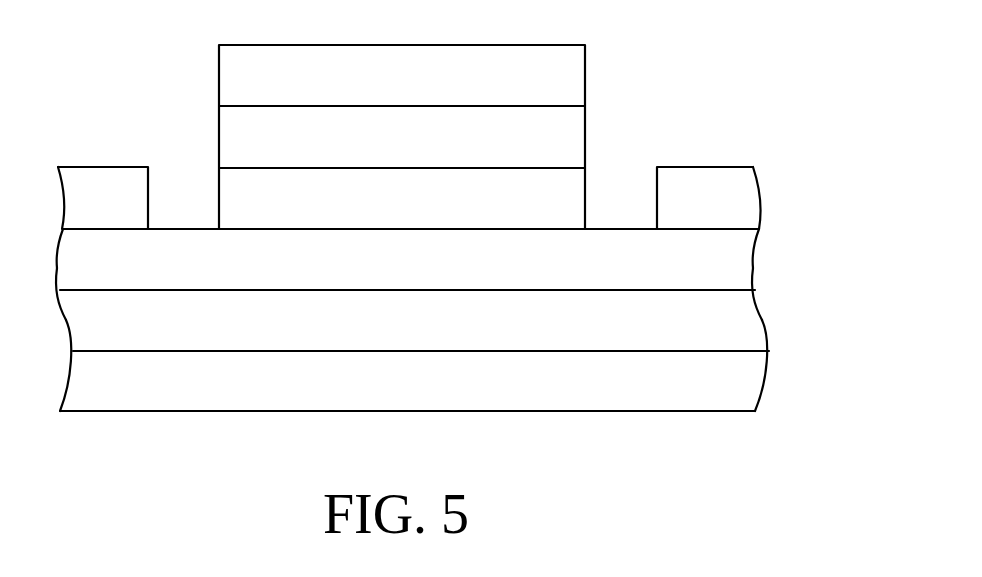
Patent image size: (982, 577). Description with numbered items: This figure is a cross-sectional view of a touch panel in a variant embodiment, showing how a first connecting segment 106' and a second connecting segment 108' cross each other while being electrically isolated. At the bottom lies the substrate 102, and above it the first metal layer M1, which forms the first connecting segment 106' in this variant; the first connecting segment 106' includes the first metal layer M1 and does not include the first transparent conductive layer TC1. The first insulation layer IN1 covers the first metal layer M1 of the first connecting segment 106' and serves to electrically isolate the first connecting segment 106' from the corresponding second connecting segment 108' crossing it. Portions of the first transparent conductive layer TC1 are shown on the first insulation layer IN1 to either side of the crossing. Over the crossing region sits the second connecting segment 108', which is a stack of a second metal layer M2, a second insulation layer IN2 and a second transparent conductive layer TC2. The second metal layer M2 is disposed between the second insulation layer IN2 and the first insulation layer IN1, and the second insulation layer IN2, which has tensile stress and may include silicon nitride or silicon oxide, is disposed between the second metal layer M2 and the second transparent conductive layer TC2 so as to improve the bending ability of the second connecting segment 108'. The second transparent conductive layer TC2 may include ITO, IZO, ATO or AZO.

The substrate 102 is at (366, 397).
The first metal layer M1 is at (368, 339).
The first insulation layer IN1 is at (366, 277).
The first transparent conductive layer TC1 is at (134, 217).
The second metal layer M2 is at (366, 214).
The second insulation layer IN2 is at (366, 150).
The second transparent conductive layer TC2 is at (363, 89).
The second connecting segment 108' is at (447, 137).
The first connecting segment 106' is at (454, 360).